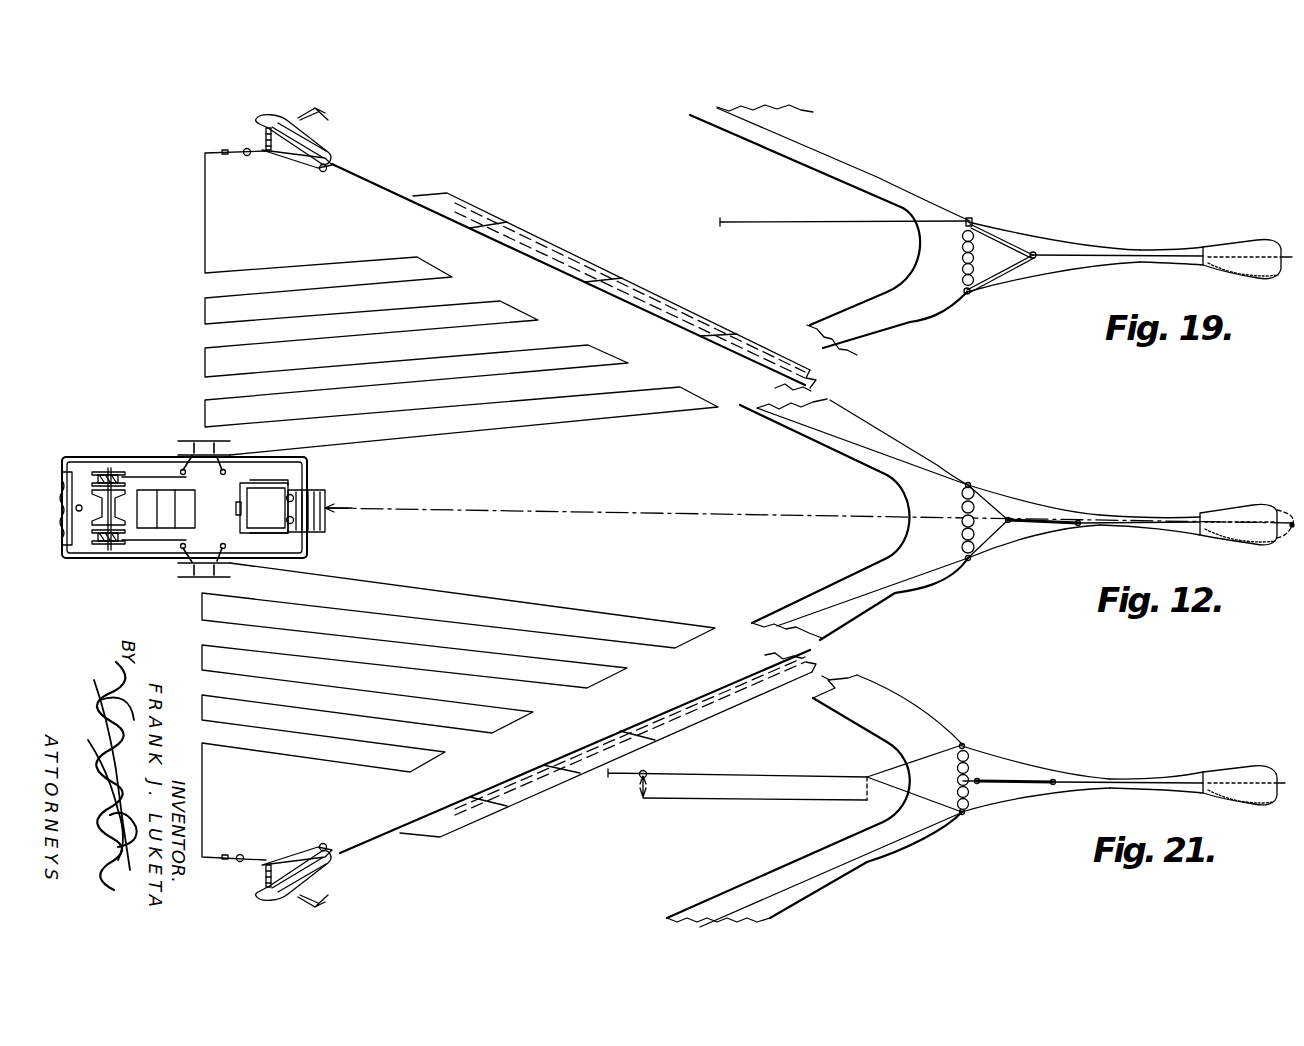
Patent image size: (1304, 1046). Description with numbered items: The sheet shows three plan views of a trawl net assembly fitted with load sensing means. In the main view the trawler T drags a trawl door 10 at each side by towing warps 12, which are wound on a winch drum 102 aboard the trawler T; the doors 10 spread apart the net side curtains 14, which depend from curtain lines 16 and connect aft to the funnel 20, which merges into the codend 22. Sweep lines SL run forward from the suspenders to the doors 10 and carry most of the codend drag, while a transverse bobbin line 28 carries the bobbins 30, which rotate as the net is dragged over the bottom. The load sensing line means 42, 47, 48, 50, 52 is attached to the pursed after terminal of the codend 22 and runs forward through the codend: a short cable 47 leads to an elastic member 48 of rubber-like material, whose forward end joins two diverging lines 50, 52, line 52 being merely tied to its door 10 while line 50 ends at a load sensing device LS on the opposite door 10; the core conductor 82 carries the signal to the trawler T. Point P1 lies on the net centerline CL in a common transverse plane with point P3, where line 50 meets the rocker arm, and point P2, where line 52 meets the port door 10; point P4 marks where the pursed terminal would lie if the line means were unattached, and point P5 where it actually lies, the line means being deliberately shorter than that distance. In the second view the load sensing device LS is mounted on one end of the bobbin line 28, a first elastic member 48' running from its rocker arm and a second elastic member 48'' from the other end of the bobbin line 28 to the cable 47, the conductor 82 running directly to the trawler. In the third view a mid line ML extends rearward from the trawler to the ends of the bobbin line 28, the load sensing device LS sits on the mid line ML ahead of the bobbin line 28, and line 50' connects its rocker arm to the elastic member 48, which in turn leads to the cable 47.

In FIG. 12, the trawl door 10 is at (244, 128).
In FIG. 12, the towing warp 12 is at (205, 230).
In FIG. 12, the net side member or curtain 14 is at (528, 238).
In FIG. 19, the net side member or curtain 14 is at (830, 146).
In FIG. 21, the net side member or curtain 14 is at (872, 687).
In FIG. 12, the curtain line 16 is at (588, 280).
In FIG. 19, the curtain line 16 is at (795, 172).
In FIG. 21, the curtain line 16 is at (821, 845).
In FIG. 12, the funnel 20 is at (1005, 498).
In FIG. 19, the funnel 20 is at (1046, 242).
In FIG. 21, the funnel 20 is at (1000, 762).
In FIG. 12, the codend 22 is at (1139, 512).
In FIG. 19, the codend 22 is at (1131, 247).
In FIG. 21, the codend 22 is at (1134, 775).
In FIG. 12, the bobbin line 28 is at (974, 486).
In FIG. 19, the bobbin line 28 is at (967, 294).
In FIG. 21, the bobbin line 28 is at (971, 750).
In FIG. 12, the bobbin 30 is at (975, 550).
In FIG. 19, the bobbin 30 is at (961, 260).
In FIG. 21, the bobbin 30 is at (972, 806).
In FIG. 12, the load sensing line means 42 is at (1220, 540).
In FIG. 19, the load sensing line means 42 is at (1214, 251).
In FIG. 21, the load sensing line means 42 is at (1220, 778).
In FIG. 12, the wire rope or cable 47 is at (1100, 534).
In FIG. 19, the wire rope or cable 47 is at (1079, 272).
In FIG. 21, the wire rope or cable 47 is at (1088, 792).
In FIG. 12, the elastic member 48 is at (1084, 511).
In FIG. 21, the elastic member 48 is at (1083, 754).
In FIG. 19, the first elastic member 48' is at (1014, 222).
In FIG. 19, the second elastic member 48'' is at (1015, 283).
In FIG. 12, the line 50 is at (711, 506).
In FIG. 21, the line 50' is at (849, 778).
In FIG. 12, the line 52 is at (703, 343).
In FIG. 19, the core conductor 82 is at (739, 224).
In FIG. 21, the core conductor 82 is at (636, 798).
In FIG. 12, the winch drum 102 is at (122, 474).
In FIG. 12, the trawler T is at (192, 489).
In FIG. 12, the point P1 is at (341, 497).
In FIG. 12, the point P2 is at (330, 158).
In FIG. 12, the point P3 is at (332, 862).
In FIG. 12, the point P4 is at (1286, 522).
In FIG. 12, the point P5 is at (1228, 520).
In FIG. 12, the centerline CL is at (479, 508).
In FIG. 12, the sweep line SL is at (938, 466).
In FIG. 19, the sweep line SL is at (877, 176).
In FIG. 21, the sweep line SL is at (868, 863).
In FIG. 19, the load sensing device LS is at (971, 218).
In FIG. 21, the load sensing device LS is at (646, 773).
In FIG. 21, the mid line ML is at (728, 800).